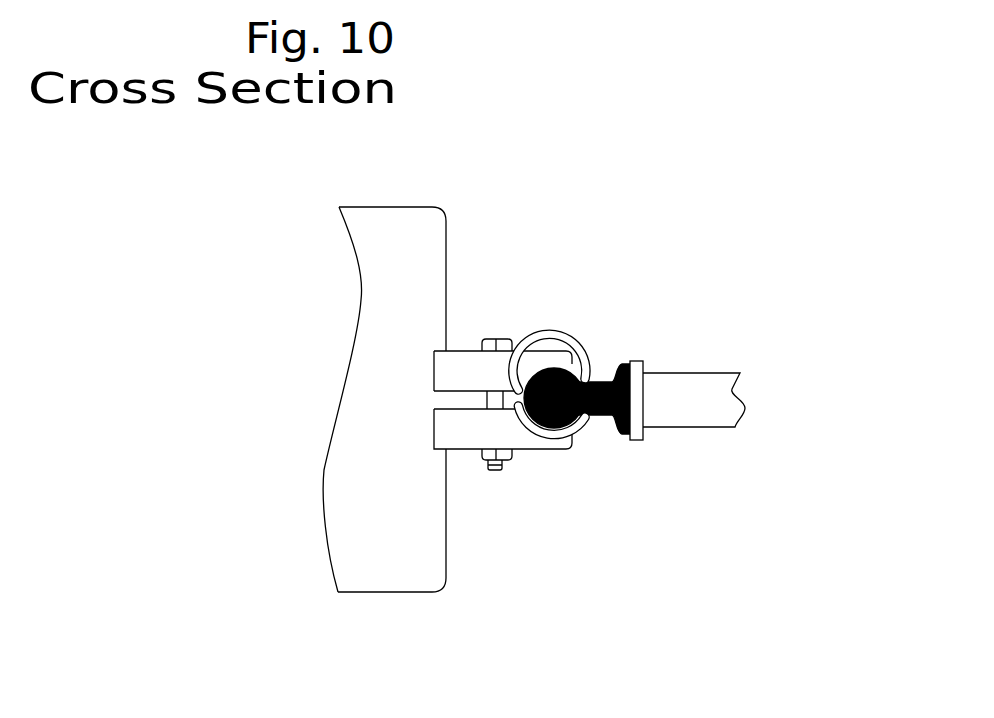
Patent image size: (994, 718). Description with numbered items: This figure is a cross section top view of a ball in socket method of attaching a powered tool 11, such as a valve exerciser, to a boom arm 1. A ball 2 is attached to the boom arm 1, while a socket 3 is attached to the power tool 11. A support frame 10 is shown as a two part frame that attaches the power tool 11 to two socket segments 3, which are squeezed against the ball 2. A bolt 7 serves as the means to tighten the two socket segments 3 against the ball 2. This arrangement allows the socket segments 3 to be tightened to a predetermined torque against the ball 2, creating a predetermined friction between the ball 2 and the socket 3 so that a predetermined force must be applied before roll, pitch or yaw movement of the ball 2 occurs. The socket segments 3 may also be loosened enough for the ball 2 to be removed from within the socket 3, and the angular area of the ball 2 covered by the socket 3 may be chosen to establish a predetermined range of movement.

The boom arm 1 is at (743, 393).
The ball 2 is at (590, 417).
The socket 3 is at (586, 371).
The bolt 7 is at (508, 462).
The support frame 10 is at (533, 351).
The powered tool 11 is at (370, 447).